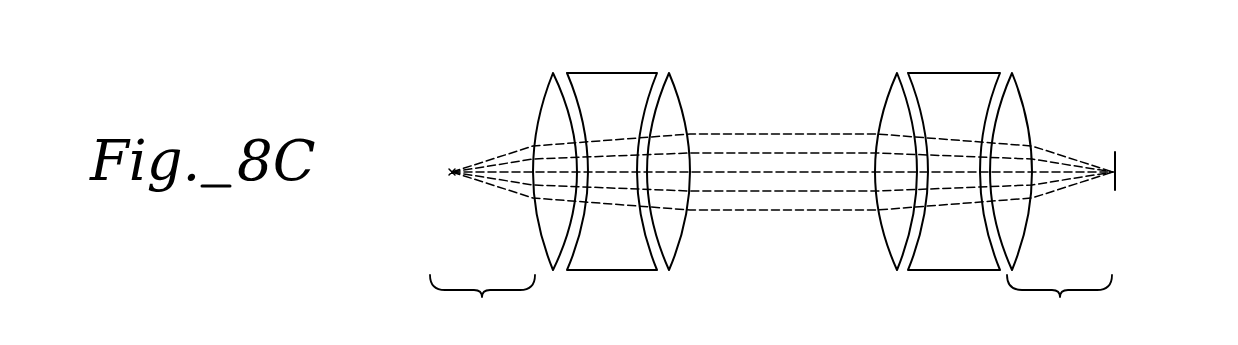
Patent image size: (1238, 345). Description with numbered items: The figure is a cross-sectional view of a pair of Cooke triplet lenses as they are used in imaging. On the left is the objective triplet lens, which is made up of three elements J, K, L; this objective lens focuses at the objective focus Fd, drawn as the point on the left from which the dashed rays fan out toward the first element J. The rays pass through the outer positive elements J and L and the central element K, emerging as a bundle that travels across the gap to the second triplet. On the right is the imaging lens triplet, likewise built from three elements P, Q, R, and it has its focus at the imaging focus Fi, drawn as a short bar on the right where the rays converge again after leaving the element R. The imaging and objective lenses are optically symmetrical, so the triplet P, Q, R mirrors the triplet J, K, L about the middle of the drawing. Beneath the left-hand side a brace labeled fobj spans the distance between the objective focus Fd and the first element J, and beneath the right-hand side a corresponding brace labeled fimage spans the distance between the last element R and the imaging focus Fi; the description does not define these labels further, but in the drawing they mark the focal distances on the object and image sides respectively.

The objective triplet lens element J is at (553, 73).
The objective triplet lens element K is at (613, 73).
The objective triplet lens element L is at (669, 73).
The imaging triplet lens element P is at (897, 73).
The imaging triplet lens element Q is at (955, 73).
The imaging triplet lens element R is at (1012, 73).
The objective focus Fd is at (452, 172).
The imaging lens focus Fi is at (1119, 172).
The objective focal length fobj is at (482, 299).
The image focal length fimage is at (1059, 298).